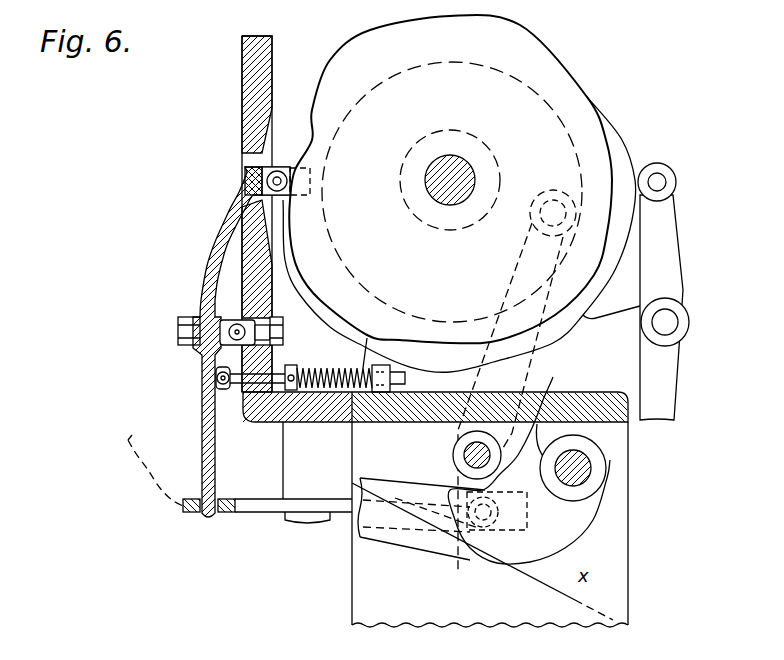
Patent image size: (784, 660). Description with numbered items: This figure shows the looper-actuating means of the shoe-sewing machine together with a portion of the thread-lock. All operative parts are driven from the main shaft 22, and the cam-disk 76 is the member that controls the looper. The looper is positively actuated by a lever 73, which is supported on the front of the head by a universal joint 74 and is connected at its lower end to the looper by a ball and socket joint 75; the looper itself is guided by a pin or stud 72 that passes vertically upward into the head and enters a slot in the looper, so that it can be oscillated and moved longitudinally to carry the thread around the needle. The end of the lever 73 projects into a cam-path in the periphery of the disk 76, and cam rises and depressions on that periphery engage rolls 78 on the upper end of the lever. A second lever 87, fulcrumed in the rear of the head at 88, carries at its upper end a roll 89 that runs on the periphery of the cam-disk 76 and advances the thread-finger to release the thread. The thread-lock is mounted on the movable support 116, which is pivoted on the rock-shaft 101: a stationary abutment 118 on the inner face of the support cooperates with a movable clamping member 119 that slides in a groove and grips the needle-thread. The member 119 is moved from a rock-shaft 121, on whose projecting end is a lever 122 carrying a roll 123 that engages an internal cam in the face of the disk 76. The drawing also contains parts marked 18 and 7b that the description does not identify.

The cam-disk 76 is at (512, 44).
The lever 18 is at (292, 160).
The rolls 78 is at (303, 183).
The main shaft 22 is at (442, 200).
The roll 123 is at (565, 200).
The lever 122 is at (513, 373).
The roll 89 is at (670, 181).
The fulcrum 88 is at (668, 322).
The lever 87 is at (665, 395).
The universal joint 74 is at (208, 330).
The lever 73 is at (202, 383).
The lever 7b is at (112, 459).
The ball and socket joint 75 is at (215, 514).
The pin or stud 72 is at (305, 520).
The rock-shaft 121 is at (460, 452).
The rock-shaft 101 is at (592, 469).
The movable support 116 is at (562, 515).
The stationary member or abutment 118 is at (402, 523).
The movable clamping member 119 is at (486, 545).